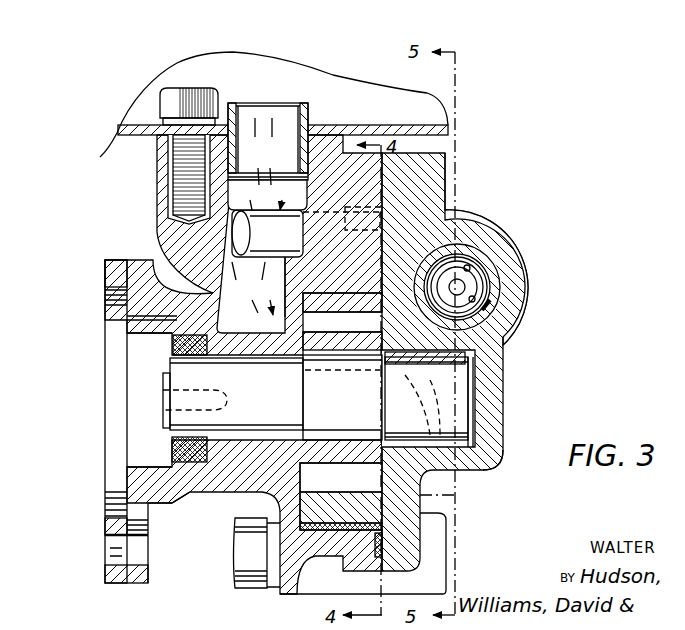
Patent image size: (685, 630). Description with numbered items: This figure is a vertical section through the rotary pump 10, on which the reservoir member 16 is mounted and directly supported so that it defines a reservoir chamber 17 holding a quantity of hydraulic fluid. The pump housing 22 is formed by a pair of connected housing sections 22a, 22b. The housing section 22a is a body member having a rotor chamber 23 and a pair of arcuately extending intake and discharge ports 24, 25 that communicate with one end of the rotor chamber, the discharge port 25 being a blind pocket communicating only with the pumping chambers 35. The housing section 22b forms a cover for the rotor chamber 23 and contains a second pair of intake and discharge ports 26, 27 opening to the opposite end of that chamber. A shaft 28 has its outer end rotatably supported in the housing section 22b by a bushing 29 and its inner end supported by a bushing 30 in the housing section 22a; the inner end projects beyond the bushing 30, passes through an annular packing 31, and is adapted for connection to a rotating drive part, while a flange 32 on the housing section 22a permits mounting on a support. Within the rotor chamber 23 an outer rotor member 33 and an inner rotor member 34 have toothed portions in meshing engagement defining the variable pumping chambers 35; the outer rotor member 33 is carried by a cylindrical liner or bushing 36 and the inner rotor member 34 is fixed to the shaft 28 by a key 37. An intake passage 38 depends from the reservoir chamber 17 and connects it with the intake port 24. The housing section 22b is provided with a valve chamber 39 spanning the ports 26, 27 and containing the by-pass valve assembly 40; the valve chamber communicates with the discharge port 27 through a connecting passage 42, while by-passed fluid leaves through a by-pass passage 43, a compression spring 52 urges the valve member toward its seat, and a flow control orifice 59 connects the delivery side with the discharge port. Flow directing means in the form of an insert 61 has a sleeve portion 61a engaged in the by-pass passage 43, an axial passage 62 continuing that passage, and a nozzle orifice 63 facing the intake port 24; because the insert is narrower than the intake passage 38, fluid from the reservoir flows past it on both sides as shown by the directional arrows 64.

The rotary pump 10 is at (508, 426).
The reservoir member 16 is at (128, 138).
The reservoir chamber 17 is at (342, 92).
The pump housing 22 is at (228, 494).
The housing section 22a is at (215, 515).
The housing section 22b is at (484, 472).
The rotor chamber 23 is at (333, 570).
The intake port 24 is at (270, 358).
The discharge port 25 is at (272, 466).
The intake port 26 is at (390, 334).
The discharge port 27 is at (450, 496).
The shaft 28 is at (336, 446).
The bushing 29 is at (506, 346).
The bushing 30 is at (225, 348).
The annular packing 31 is at (192, 360).
The flange 32 is at (115, 583).
The outer rotor member 33 is at (312, 297).
The inner rotor member 34 is at (352, 447).
The pumping chambers 35 is at (282, 503).
The cylindrical liner or bushing 36 is at (325, 532).
The key 37 is at (318, 365).
The intake passage 38 is at (205, 286).
The valve chamber 39 is at (487, 268).
The by-pass valve assembly 40 is at (503, 275).
The connecting passage 42 is at (480, 392).
The by-pass passage 43 is at (425, 185).
The compression spring 52 is at (508, 307).
The flow control orifice 59 is at (465, 289).
The insert 61 is at (273, 182).
The sleeve portion 61a is at (318, 210).
The axial passage 62 is at (276, 261).
The nozzle orifice 63 is at (250, 262).
The directional arrows 64 is at (263, 193).